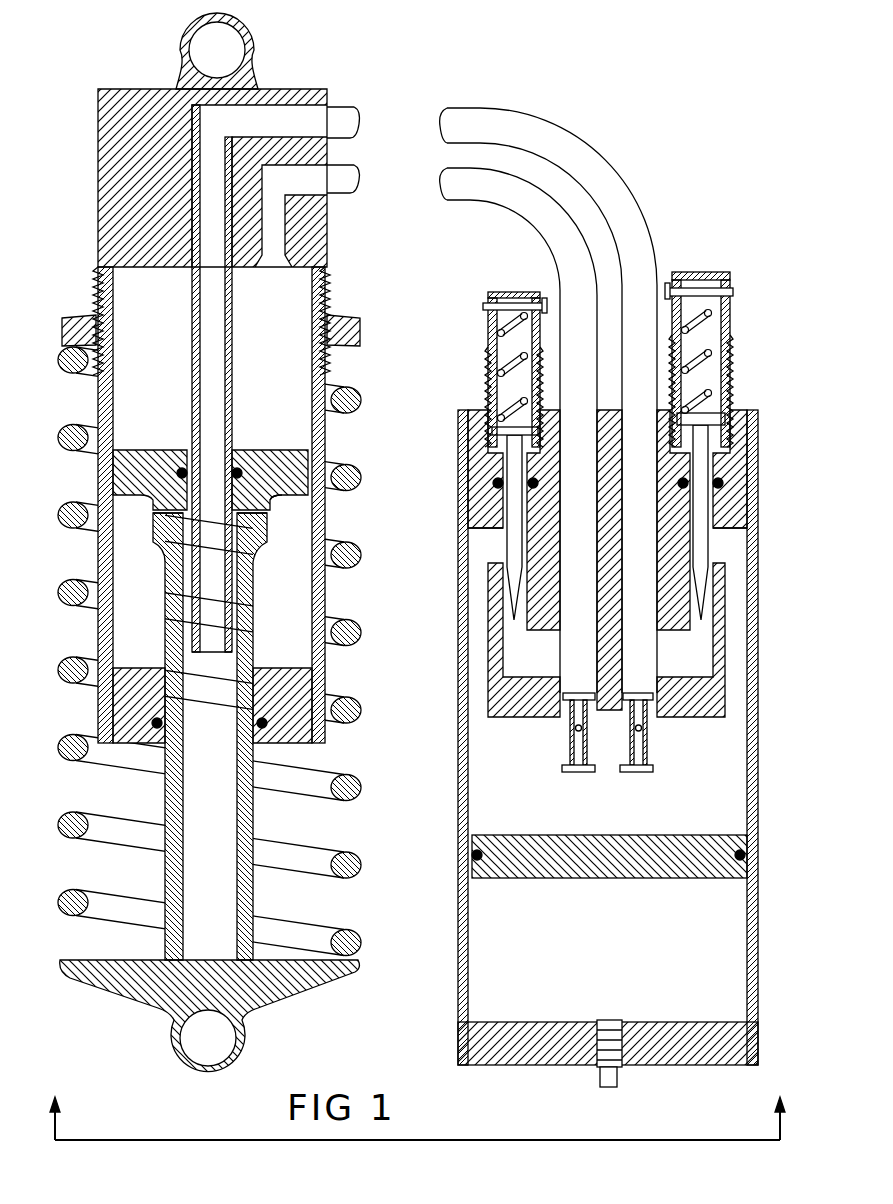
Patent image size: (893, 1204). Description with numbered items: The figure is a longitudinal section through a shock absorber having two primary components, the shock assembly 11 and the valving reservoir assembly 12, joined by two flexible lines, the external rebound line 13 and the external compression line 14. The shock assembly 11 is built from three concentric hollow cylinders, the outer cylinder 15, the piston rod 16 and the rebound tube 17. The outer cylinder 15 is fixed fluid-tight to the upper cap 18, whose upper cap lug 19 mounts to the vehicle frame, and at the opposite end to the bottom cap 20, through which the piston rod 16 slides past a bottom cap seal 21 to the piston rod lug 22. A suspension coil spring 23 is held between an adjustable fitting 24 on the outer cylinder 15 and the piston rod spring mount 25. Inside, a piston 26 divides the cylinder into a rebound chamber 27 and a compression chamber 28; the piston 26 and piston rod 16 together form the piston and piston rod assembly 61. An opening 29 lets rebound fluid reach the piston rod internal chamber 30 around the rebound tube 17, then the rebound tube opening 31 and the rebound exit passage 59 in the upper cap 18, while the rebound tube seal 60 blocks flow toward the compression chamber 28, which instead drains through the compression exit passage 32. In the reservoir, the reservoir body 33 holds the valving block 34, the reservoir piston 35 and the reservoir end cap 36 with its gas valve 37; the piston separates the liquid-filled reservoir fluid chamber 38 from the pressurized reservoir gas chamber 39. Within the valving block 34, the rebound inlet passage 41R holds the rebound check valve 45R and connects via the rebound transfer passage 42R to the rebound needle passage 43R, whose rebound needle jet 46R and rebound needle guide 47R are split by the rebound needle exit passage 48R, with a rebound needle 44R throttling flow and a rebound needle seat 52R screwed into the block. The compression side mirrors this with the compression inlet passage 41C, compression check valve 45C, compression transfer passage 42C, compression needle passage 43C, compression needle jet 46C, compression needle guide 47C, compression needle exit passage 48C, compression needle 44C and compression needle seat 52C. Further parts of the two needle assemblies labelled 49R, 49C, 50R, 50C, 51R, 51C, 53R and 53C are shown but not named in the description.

The shock assembly 11 is at (147, 82).
The valving reservoir assembly 12 is at (677, 1067).
The external rebound line 13 is at (440, 130).
The external compression line 14 is at (440, 190).
The outer cylinder 15 is at (100, 640).
The piston rod 16 is at (165, 790).
The rebound tube 17 is at (232, 366).
The upper cap 18 is at (110, 182).
The upper cap lug 19 is at (236, 48).
The bottom cap 20 is at (120, 715).
The bottom cap seal 21 is at (265, 742).
The piston rod lug 22 is at (195, 1037).
The suspension coil spring 23 is at (60, 436).
The adjustable fitting 24 is at (98, 325).
The piston rod spring mount 25 is at (312, 995).
The piston 26 is at (157, 427).
The rebound chamber 27 is at (293, 639).
The compression chamber 28 is at (274, 312).
The opening 29 is at (165, 517).
The piston rod internal chamber 30 is at (183, 590).
The rebound tube opening 31 is at (213, 655).
The compression exit passage 32 is at (304, 192).
The reservoir body 33 is at (458, 918).
The valving block 34 is at (468, 408).
The reservoir piston 35 is at (545, 880).
The reservoir end cap 36 is at (540, 1048).
The gas valve 37 is at (600, 1080).
The reservoir fluid chamber 38 is at (594, 827).
The reservoir gas chamber 39 is at (594, 979).
The compression inlet passage 41C is at (560, 330).
The rebound inlet passage 41R is at (637, 325).
The compression transfer passage 42C is at (560, 665).
The rebound transfer passage 42R is at (680, 665).
The compression needle passage 43C is at (500, 608).
The rebound needle passage 43R is at (705, 612).
The compression needle 44C is at (493, 435).
The rebound needle 44R is at (722, 458).
The compression check valve 45C is at (565, 750).
The rebound check valve 45R is at (650, 748).
The compression needle jet 46C is at (500, 577).
The rebound needle jet 46R is at (707, 583).
The compression needle guide 47C is at (498, 512).
The rebound needle guide 47R is at (712, 516).
The compression needle exit passage 48C is at (480, 552).
The rebound needle exit passage 48R is at (725, 545).
The needle seal 49C is at (493, 483).
The needle seal 49R is at (723, 483).
The adjusting spring 50C is at (500, 320).
The adjusting spring 50R is at (712, 328).
The adjuster fitting 51C is at (488, 294).
The adjuster fitting 51R is at (725, 285).
The compression needle seat 52C is at (487, 372).
The rebound needle seat 52R is at (732, 370).
The cross pin 53C is at (483, 306).
The cross pin 53R is at (733, 292).
The rebound exit passage 59 is at (254, 134).
The rebound tube seal 60 is at (238, 468).
The piston and piston rod assembly 61 is at (280, 500).